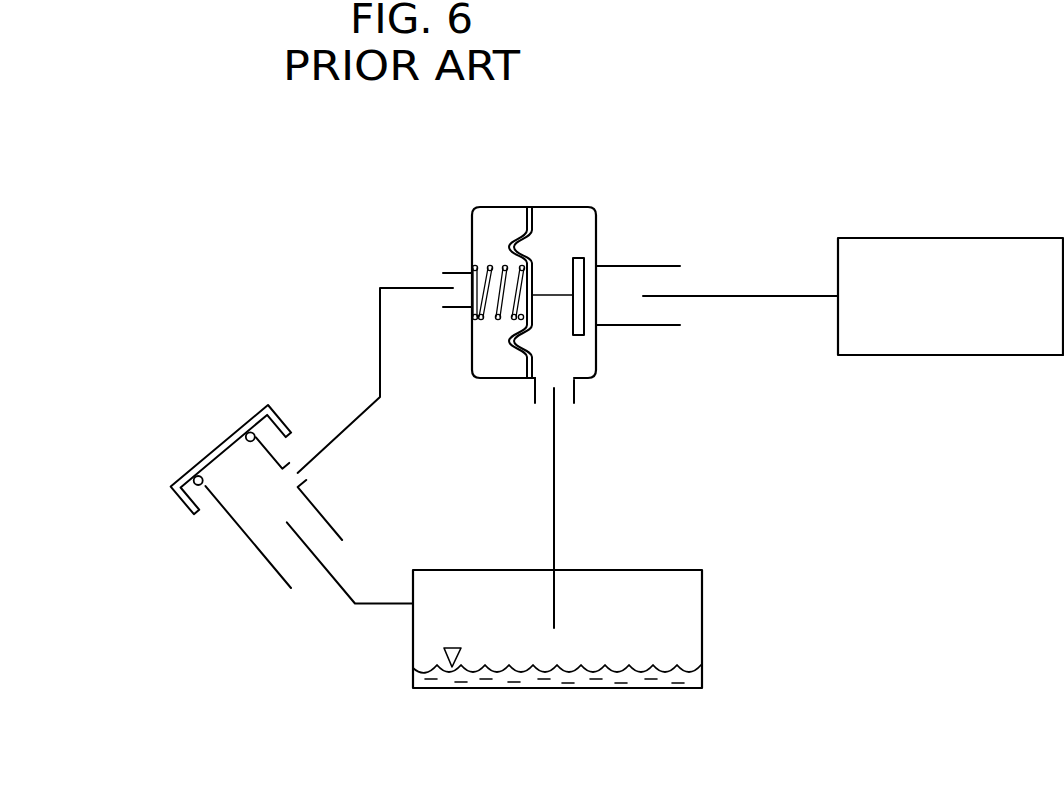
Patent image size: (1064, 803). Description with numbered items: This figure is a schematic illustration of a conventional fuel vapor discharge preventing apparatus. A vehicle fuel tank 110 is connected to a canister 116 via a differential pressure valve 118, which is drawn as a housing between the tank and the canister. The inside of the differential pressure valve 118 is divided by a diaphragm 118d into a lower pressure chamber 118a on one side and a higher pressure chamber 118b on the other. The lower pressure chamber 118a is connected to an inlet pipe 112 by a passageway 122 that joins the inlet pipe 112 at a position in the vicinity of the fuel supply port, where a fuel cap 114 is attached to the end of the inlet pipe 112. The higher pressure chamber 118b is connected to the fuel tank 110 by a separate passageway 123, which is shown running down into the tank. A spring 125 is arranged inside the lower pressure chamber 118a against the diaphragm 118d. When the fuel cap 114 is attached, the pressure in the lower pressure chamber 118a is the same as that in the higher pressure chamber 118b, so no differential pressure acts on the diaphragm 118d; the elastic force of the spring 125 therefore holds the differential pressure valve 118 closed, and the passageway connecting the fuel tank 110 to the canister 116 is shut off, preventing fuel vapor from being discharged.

The vehicle fuel tank 110 is at (658, 553).
The inlet pipe 112 is at (267, 560).
The fuel cap 114 is at (195, 512).
The canister 116 is at (972, 238).
The differential pressure valve 118 is at (570, 153).
The lower pressure chamber 118a is at (483, 227).
The higher pressure chamber 118b is at (578, 353).
The diaphragm 118d is at (527, 222).
The passageway 122 is at (380, 345).
The passageway 123 is at (554, 458).
The spring 125 is at (497, 318).